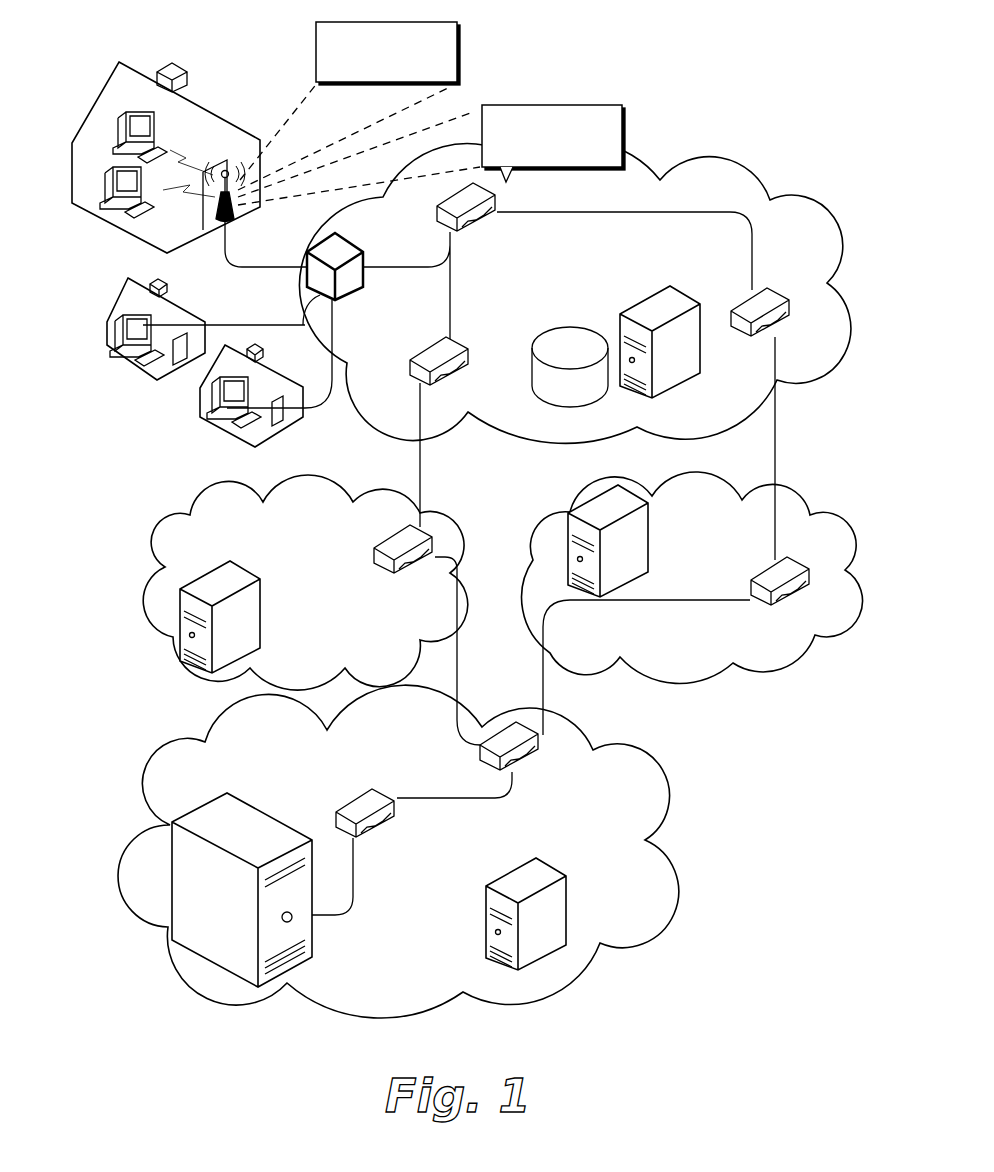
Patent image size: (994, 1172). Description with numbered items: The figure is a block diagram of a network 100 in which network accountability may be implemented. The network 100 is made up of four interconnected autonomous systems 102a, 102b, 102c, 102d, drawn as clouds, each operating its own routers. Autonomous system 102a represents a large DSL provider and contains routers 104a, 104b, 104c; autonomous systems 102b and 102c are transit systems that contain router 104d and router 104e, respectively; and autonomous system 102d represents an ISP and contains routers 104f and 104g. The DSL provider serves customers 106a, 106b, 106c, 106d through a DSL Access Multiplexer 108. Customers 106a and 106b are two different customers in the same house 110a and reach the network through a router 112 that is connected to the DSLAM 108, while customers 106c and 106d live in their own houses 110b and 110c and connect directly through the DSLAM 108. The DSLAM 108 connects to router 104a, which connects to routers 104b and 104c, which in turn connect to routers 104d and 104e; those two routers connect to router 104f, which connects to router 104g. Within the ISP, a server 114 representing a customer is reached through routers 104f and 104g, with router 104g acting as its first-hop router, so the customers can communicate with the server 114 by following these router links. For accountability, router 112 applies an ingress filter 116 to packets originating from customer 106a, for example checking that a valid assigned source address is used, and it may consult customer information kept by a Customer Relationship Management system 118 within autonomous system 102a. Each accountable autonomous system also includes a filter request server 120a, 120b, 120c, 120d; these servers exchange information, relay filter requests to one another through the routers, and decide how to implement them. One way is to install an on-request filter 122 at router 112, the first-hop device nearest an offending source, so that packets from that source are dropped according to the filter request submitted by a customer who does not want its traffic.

The network 100 is at (759, 94).
The autonomous system 102a is at (575, 292).
The autonomous system 102b is at (305, 582).
The autonomous system 102c is at (692, 578).
The autonomous system 102d is at (398, 851).
The router 104a is at (473, 228).
The router 104b is at (430, 343).
The router 104c is at (757, 290).
The router 104d is at (393, 537).
The router 104e is at (783, 603).
The router 104f is at (533, 757).
The router 104g is at (368, 788).
The customer 106a is at (150, 128).
The customer 106b is at (137, 224).
The customer 106c is at (153, 370).
The customer 106d is at (223, 420).
The DSL Access Multiplexer 108 is at (360, 236).
The house 110a is at (227, 110).
The house 110b is at (183, 305).
The house 110c is at (260, 440).
The router 112 is at (233, 215).
The server 114 is at (253, 805).
The ingress filter 116 is at (388, 53).
The Customer Relationship Management system 118 is at (545, 397).
The filter request server 120a is at (682, 385).
The filter request server 120b is at (217, 567).
The filter request server 120c is at (603, 493).
The filter request server 120d is at (537, 858).
The on-request filter 122 is at (553, 143).